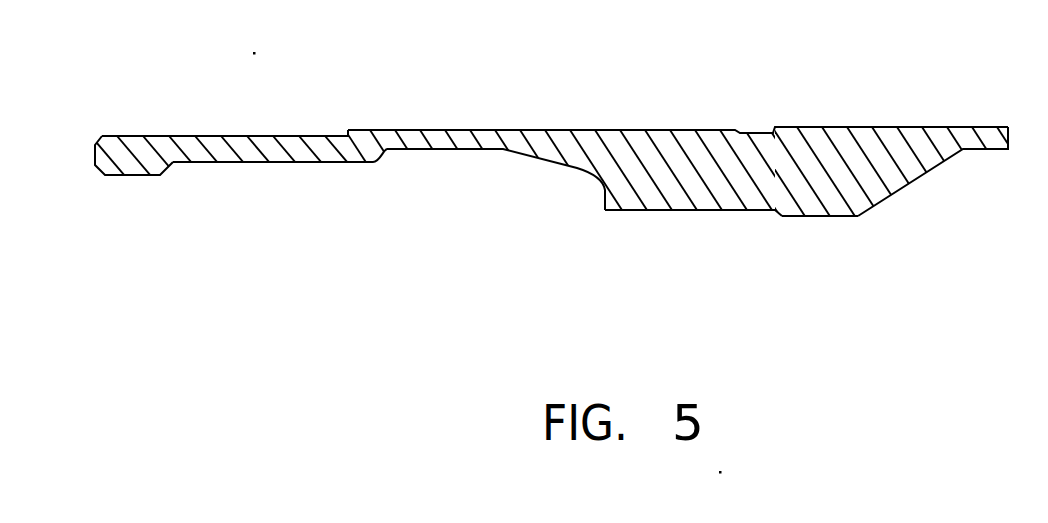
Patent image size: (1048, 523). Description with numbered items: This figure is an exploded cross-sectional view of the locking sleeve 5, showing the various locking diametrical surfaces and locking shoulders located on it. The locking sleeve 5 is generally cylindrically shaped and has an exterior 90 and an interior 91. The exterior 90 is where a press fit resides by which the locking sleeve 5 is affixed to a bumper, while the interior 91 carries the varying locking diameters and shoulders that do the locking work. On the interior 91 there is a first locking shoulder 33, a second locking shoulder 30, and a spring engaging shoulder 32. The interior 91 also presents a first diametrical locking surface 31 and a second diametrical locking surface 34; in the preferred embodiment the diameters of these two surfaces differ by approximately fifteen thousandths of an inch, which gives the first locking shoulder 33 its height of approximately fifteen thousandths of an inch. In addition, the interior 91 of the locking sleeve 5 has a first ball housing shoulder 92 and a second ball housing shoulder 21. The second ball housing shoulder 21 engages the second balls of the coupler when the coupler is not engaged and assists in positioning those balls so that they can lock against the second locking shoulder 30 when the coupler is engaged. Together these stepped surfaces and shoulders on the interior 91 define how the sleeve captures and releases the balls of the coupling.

The exterior 90 is at (652, 82).
The locking sleeve 5 is at (757, 168).
The second locking shoulder 30 is at (163, 172).
The second ball housing shoulder 21 is at (382, 153).
The spring engaging shoulder 32 is at (603, 188).
The interior 91 is at (589, 226).
The first diametrical locking surface 31 is at (702, 210).
The first locking shoulder 33 is at (782, 217).
The second diametrical locking surface 34 is at (830, 217).
The first ball housing shoulder 92 is at (903, 187).